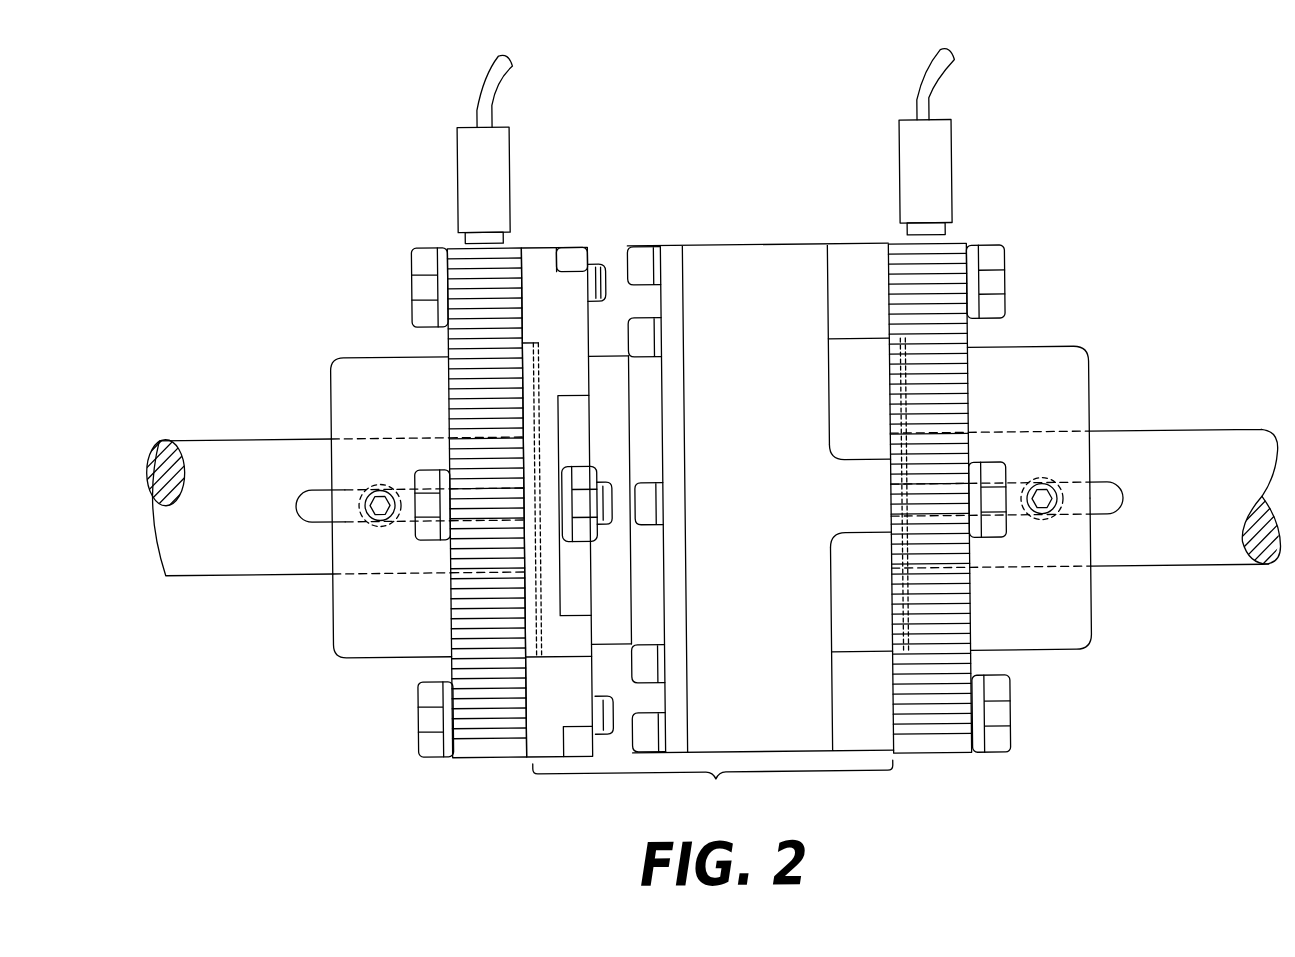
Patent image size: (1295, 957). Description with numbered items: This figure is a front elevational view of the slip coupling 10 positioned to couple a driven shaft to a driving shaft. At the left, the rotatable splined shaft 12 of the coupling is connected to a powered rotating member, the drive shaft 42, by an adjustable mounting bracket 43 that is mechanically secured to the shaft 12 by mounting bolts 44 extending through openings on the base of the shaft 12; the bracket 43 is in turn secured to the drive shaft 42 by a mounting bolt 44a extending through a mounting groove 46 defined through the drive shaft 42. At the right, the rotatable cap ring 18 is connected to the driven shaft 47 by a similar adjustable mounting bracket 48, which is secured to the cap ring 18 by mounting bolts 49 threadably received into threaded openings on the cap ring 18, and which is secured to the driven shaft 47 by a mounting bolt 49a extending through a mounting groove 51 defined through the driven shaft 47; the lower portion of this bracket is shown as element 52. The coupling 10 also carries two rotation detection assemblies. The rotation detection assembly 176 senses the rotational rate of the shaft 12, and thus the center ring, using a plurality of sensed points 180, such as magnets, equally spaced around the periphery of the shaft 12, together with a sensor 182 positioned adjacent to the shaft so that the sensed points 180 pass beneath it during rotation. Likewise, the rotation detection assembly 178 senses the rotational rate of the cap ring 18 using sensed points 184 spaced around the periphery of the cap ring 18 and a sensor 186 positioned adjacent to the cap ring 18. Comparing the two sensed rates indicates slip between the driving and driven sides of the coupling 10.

The slip coupling 10 is at (713, 783).
The splined shaft 12 is at (539, 246).
The cap ring 18 is at (770, 245).
The drive shaft 42 is at (236, 435).
The adjustable mounting bracket 43 is at (360, 655).
The mounting bolts 44 is at (414, 284).
The mounting bolt 44a is at (366, 512).
The mounting groove 46 is at (296, 502).
The driven shaft 47 is at (1239, 453).
The adjustable mounting bracket 48 is at (1040, 350).
The mounting bolts 49 is at (1009, 286).
The mounting bolt 49a is at (1026, 513).
The mounting groove 51 is at (1106, 484).
The second flange lower portion 52 is at (1092, 594).
The rotation detection assembly 176 is at (542, 93).
The rotation detection assembly 178 is at (985, 91).
The sensed points 180 is at (462, 399).
The sensor 182 is at (513, 184).
The sensed points 184 is at (891, 339).
The sensor 186 is at (955, 182).